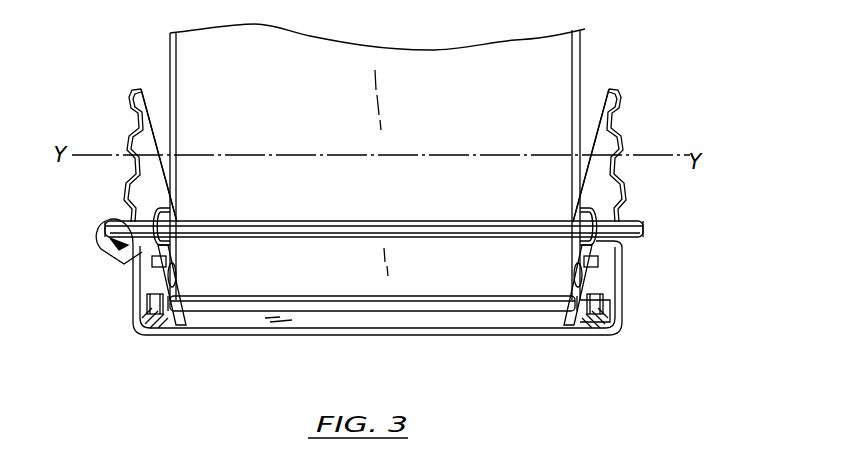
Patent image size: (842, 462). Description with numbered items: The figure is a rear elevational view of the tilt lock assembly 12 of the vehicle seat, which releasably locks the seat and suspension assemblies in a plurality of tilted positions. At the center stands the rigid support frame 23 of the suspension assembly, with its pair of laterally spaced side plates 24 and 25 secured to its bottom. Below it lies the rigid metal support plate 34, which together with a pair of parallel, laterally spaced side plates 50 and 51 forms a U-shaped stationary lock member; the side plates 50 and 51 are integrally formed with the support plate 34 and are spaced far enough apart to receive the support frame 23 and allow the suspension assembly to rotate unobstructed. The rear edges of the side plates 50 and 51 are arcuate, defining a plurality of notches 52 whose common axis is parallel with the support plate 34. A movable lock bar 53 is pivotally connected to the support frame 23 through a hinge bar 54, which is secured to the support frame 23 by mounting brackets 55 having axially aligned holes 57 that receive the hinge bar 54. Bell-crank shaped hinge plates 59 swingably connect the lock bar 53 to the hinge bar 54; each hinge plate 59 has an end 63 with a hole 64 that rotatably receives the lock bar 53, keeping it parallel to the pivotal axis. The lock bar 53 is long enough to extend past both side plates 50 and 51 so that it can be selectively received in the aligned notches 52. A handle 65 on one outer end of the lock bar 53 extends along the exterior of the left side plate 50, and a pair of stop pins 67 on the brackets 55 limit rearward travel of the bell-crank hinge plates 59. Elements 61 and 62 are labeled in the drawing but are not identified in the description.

The tilt lock assembly 12 is at (678, 221).
The support frame 23 is at (585, 30).
The side plate 24 is at (168, 64).
The side plate 25 is at (588, 63).
The support plate 34 is at (291, 328).
The side plate 50 is at (148, 128).
The side plate 51 is at (612, 127).
The notches 52 is at (127, 118).
The lock bar 53 is at (395, 221).
The hinge bar 54 is at (462, 314).
The mounting brackets 55 is at (180, 290).
The holes 57 is at (178, 314).
The hinge plates 59 is at (148, 300).
The tray corner 61 is at (146, 326).
The washer 62 is at (591, 325).
The end 63 is at (162, 208).
The holes 64 is at (178, 226).
The handle 65 is at (112, 240).
The stop pins 67 is at (152, 262).